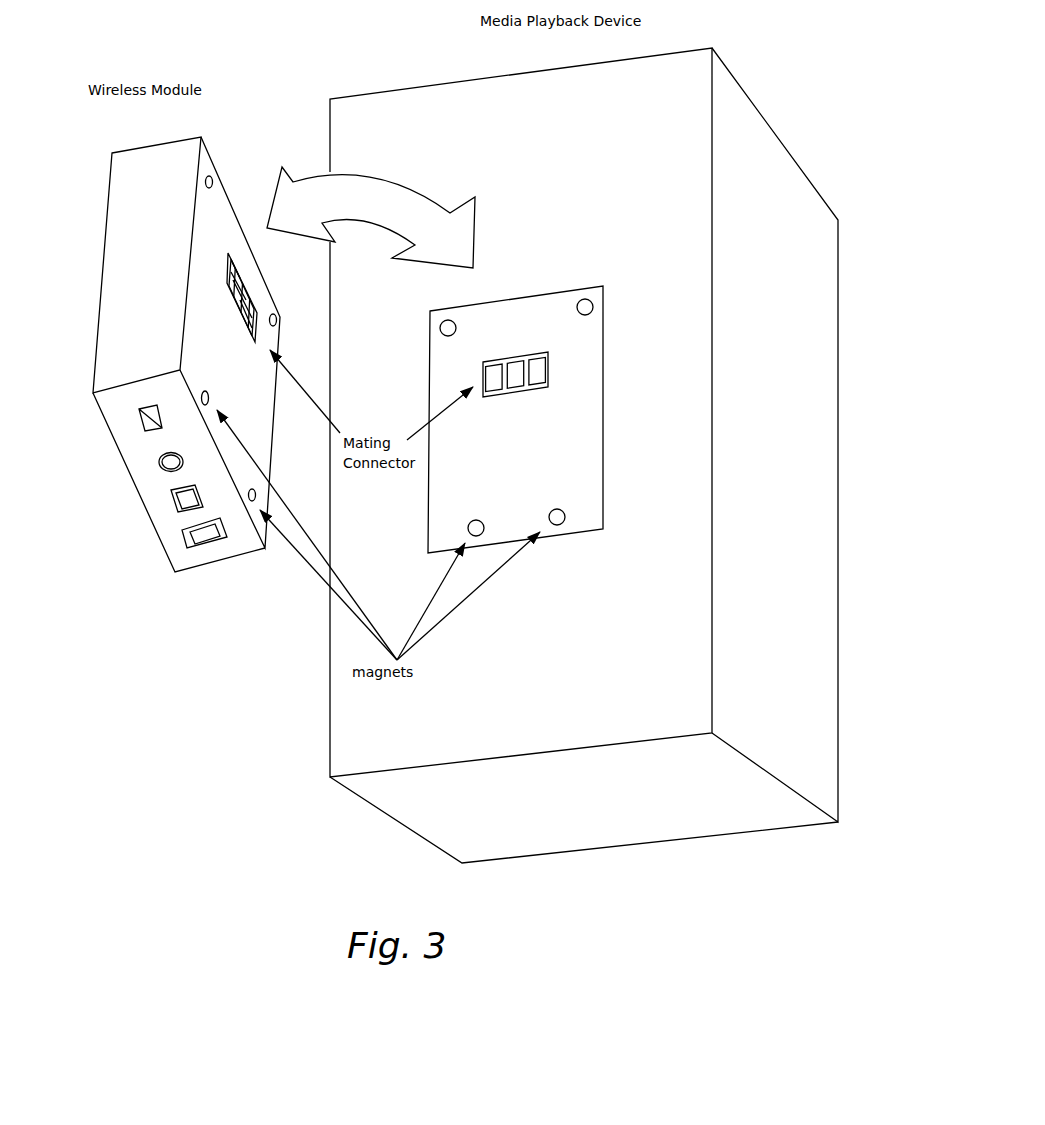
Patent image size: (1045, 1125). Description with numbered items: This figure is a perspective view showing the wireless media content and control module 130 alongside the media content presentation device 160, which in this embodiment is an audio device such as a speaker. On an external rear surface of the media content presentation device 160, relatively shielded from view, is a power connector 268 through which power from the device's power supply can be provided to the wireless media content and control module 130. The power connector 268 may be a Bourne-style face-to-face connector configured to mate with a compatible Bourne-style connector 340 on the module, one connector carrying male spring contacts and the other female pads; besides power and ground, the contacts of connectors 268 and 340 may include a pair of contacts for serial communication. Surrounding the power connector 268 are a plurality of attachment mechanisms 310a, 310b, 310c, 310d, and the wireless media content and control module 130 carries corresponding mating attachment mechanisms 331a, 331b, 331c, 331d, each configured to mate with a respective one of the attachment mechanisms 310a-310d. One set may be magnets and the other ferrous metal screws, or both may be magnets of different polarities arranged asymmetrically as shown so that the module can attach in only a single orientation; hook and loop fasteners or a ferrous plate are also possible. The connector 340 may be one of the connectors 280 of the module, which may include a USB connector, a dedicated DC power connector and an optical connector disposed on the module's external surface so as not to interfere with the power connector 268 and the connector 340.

The wireless media content and control module 130 is at (170, 258).
The connector 340 is at (237, 290).
The mating attachment mechanism 331a is at (277, 318).
The mating attachment mechanism 331b is at (215, 172).
The mating attachment mechanism 331c is at (255, 487).
The mating attachment mechanism 331d is at (215, 366).
The connectors 280 is at (160, 497).
The media content presentation device 160 is at (790, 492).
The power connector 268 is at (549, 354).
The attachment mechanism 310a is at (452, 318).
The attachment mechanism 310b is at (593, 300).
The attachment mechanism 310c is at (498, 490).
The attachment mechanism 310d is at (583, 488).